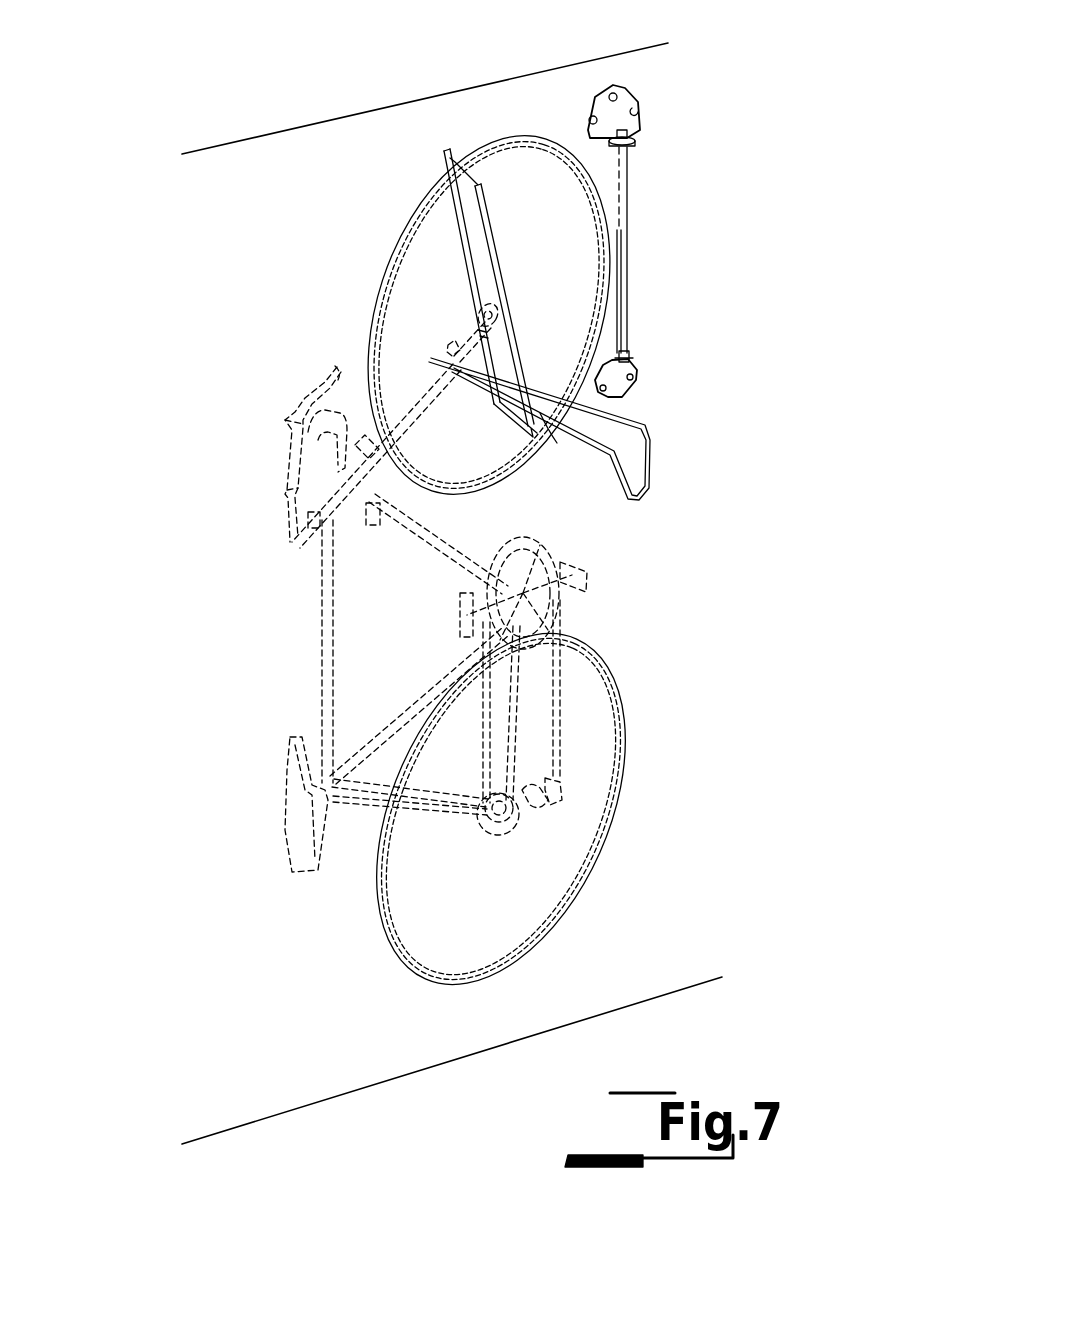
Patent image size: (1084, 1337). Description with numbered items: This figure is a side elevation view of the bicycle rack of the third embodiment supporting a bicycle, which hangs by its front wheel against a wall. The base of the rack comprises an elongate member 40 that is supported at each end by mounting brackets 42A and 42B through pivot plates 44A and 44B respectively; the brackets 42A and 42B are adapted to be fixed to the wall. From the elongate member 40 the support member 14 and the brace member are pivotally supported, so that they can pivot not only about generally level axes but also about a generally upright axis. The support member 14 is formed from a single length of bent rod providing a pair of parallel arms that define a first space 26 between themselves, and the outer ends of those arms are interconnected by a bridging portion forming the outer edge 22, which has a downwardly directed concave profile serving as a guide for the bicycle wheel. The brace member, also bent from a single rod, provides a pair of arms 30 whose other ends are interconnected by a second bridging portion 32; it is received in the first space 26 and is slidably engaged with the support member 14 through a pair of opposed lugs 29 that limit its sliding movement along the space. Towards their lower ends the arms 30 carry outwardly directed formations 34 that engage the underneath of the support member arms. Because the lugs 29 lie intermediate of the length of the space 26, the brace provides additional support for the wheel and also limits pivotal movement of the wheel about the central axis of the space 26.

The support member 14 is at (458, 358).
The outer edge 22 is at (437, 503).
The first space 26 is at (487, 412).
The lugs 29 is at (557, 365).
The arms 30 is at (579, 258).
The second bridging portion 32 is at (540, 413).
The outwardly directed formations 34 is at (455, 352).
The elongate member 40 is at (627, 225).
The mounting bracket 42A is at (597, 93).
The mounting bracket 42B is at (630, 397).
The pivot plate 44A is at (637, 143).
The pivot plate 44B is at (628, 357).